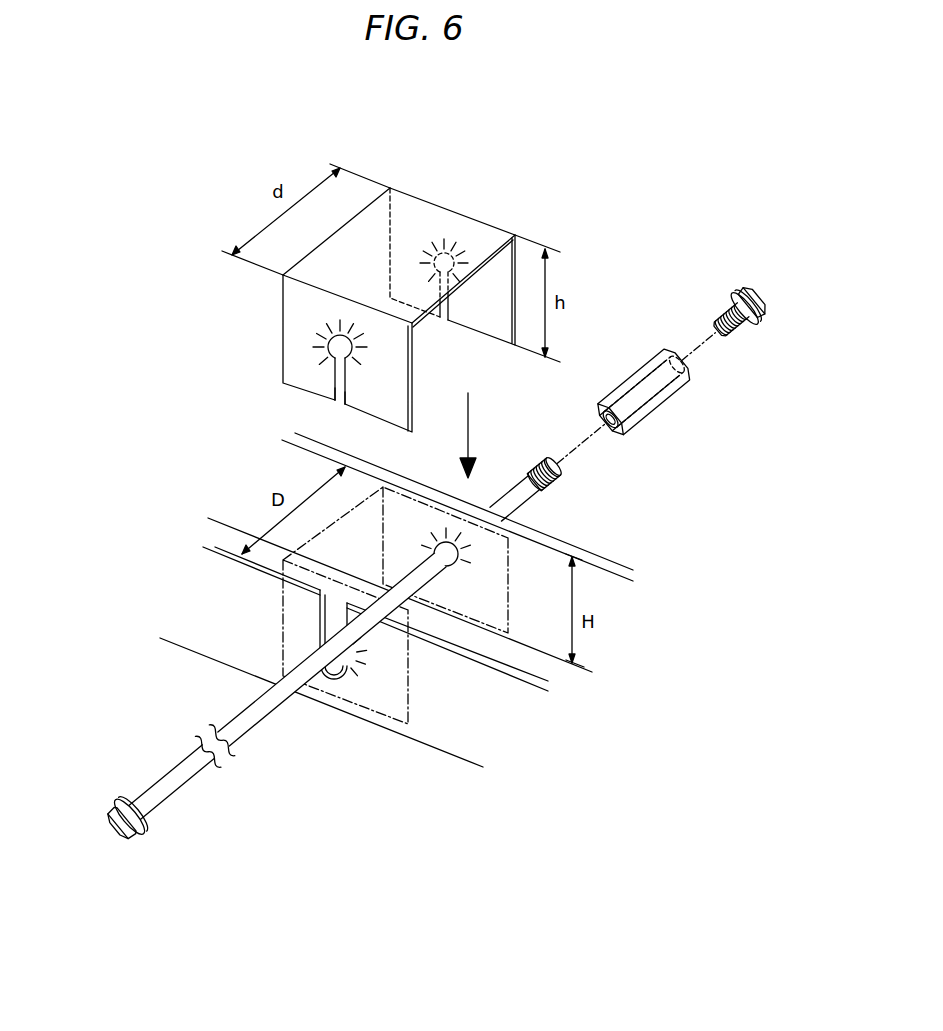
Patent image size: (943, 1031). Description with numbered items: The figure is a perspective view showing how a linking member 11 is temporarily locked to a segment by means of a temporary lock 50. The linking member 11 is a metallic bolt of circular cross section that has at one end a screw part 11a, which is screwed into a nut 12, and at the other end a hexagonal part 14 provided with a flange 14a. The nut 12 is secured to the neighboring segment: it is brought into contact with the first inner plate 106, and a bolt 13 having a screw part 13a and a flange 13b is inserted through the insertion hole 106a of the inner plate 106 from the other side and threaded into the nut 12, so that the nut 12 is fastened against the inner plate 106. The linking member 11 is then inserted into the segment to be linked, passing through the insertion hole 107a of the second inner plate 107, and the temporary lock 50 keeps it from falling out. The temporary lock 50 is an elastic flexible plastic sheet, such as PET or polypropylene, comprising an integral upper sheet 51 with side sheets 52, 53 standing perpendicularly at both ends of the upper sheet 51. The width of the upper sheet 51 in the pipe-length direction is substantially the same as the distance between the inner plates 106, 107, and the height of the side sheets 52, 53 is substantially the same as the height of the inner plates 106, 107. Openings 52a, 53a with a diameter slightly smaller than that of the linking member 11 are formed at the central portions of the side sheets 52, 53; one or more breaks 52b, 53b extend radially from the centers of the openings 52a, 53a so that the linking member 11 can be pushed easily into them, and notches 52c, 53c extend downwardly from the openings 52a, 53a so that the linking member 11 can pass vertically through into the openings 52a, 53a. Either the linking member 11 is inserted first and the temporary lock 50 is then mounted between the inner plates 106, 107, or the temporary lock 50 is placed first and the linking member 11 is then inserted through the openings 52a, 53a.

The temporary lock 50 is at (391, 274).
The upper sheet 51 is at (360, 245).
The side sheet 52 is at (300, 317).
The opening 52a is at (332, 353).
The break 52b is at (350, 355).
The notch 52c is at (328, 402).
The side sheet 53 is at (490, 322).
The opening 53a is at (458, 256).
The break 53b is at (430, 250).
The notch 53c is at (448, 322).
The linking member 11 is at (262, 707).
The screw part 11a is at (558, 483).
The nut 12 is at (643, 397).
The bolt 13 is at (768, 307).
The screw part 13a is at (735, 311).
The flange 13b is at (750, 333).
The hexagonal part 14 is at (114, 841).
The flange 14a is at (146, 826).
The inner plate 106 is at (617, 612).
The insertion hole 106a is at (440, 541).
The inner plate 107 is at (433, 732).
The insertion hole 107a is at (338, 700).